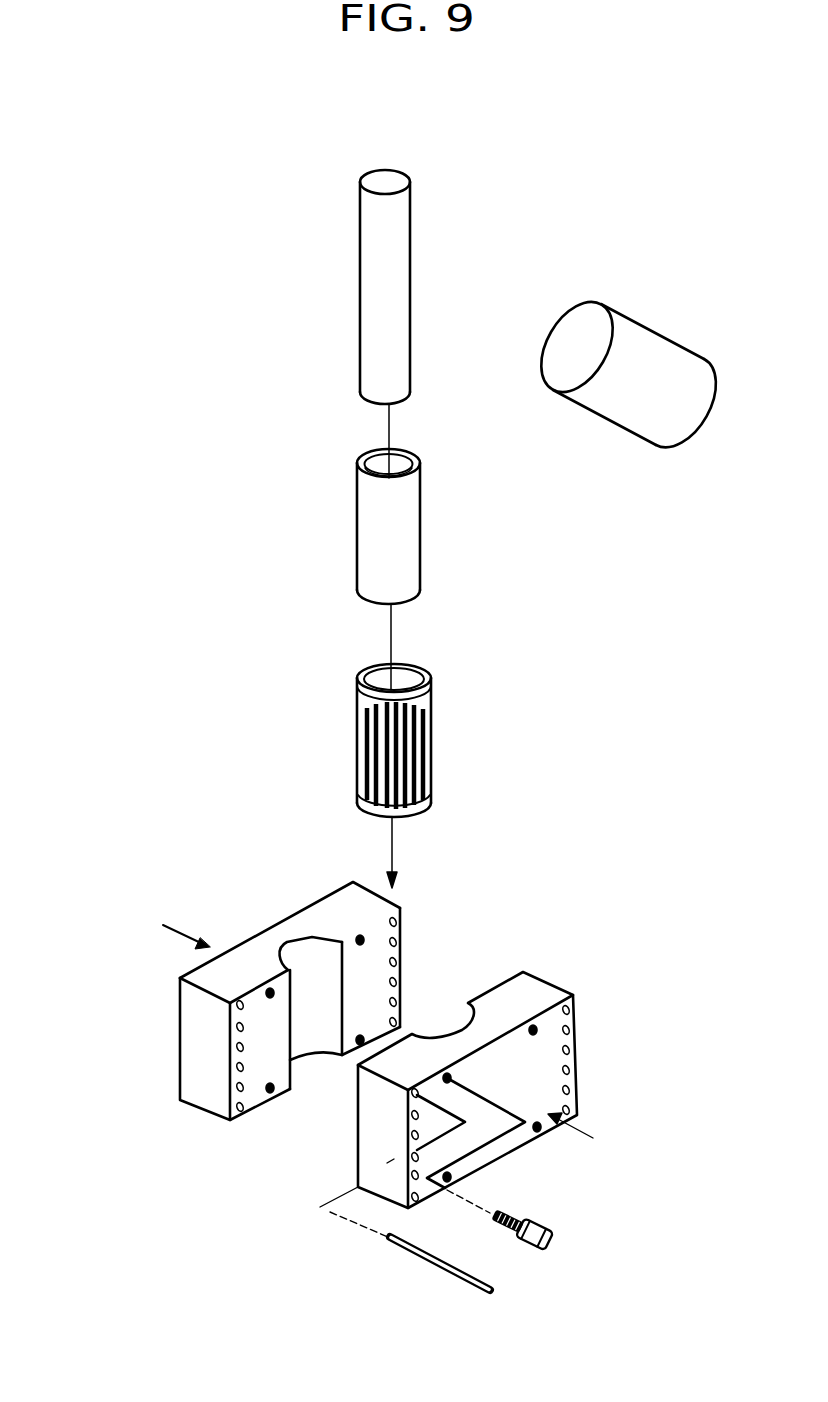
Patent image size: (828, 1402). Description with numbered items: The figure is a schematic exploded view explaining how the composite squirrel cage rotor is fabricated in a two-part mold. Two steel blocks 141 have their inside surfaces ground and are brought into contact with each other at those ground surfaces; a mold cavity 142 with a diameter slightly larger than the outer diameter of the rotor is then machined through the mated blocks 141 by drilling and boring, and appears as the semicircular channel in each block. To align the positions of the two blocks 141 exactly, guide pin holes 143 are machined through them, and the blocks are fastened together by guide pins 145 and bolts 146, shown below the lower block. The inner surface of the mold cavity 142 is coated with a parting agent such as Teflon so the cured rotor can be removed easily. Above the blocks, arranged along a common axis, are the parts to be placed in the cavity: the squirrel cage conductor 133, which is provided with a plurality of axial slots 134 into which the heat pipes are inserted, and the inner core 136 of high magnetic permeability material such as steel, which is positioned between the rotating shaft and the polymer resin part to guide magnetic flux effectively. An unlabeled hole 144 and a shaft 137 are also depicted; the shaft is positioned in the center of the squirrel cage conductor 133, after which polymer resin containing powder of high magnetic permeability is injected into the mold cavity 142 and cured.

The squirrel cage conductor 133 is at (418, 697).
The axial slots 134 is at (355, 742).
The inner core 136 is at (397, 528).
The shaft 137 is at (394, 365).
The blocks 141 is at (241, 1037).
The mold cavity 142 is at (302, 940).
The guide pin holes 143 is at (273, 1093).
The hole 144 is at (242, 1106).
The guide pins 145 is at (410, 1252).
The bolts 146 is at (534, 1220).